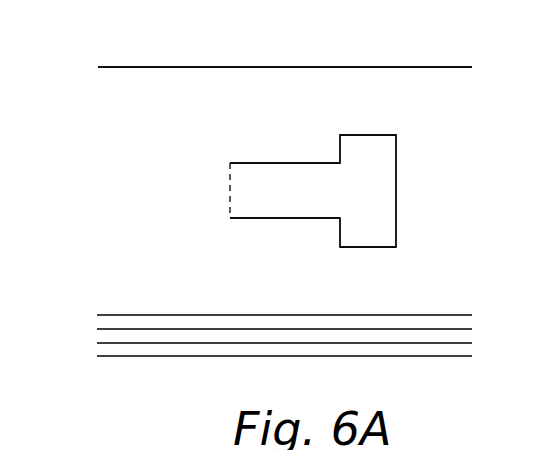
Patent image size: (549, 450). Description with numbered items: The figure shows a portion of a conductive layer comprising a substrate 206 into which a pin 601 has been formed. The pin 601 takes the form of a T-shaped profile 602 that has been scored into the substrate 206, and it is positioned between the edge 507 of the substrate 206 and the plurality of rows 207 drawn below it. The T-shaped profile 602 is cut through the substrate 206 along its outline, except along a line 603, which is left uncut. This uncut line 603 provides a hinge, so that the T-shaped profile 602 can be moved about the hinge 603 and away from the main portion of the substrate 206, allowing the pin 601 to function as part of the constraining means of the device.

The edge 507 is at (211, 67).
The substrate 206 is at (312, 72).
The line 603 is at (229, 180).
The T-shaped profile 602 is at (396, 148).
The pin 601 is at (236, 218).
The plurality of rows 207 is at (108, 350).